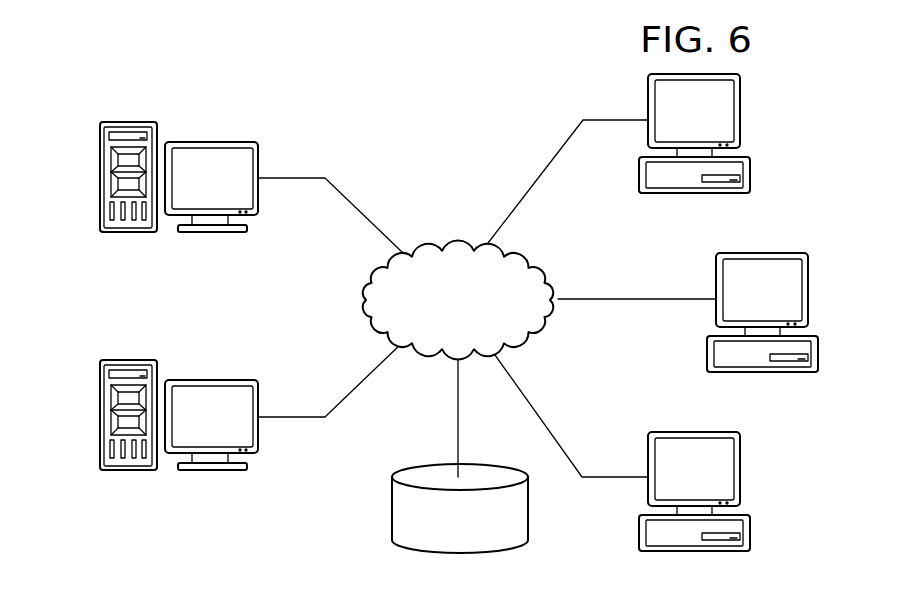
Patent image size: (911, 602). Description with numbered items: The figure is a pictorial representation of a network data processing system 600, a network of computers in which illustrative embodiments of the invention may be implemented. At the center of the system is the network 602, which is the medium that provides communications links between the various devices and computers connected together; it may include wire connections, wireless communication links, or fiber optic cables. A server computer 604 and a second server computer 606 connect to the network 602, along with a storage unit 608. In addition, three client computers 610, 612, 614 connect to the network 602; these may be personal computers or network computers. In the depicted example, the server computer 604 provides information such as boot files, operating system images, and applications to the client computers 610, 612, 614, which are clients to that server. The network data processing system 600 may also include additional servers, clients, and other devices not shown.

The network data processing system 600 is at (327, 85).
The network 602 is at (449, 241).
The server computer 604 is at (99, 177).
The server computer 606 is at (99, 417).
The storage unit 608 is at (392, 512).
The client computer 610 is at (752, 173).
The client computer 612 is at (817, 355).
The client computer 614 is at (750, 533).